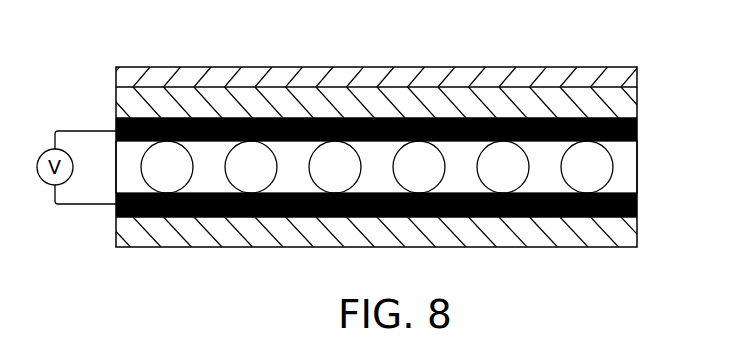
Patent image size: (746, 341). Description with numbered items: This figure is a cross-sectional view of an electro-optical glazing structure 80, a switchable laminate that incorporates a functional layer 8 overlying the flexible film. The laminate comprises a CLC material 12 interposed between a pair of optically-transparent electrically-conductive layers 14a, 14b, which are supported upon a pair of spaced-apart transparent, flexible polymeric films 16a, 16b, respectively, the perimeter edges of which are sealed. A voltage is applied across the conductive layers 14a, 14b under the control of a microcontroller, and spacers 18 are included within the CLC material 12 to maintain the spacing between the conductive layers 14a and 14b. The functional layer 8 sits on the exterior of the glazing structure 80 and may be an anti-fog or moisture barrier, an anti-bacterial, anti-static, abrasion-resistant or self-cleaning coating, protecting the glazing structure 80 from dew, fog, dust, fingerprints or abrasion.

The electro-optical glazing structure 80 is at (509, 54).
The functional layer 8 is at (620, 78).
The transparent flexible polymeric film 16a is at (625, 105).
The optically-transparent electrically-conductive layer 14a is at (637, 132).
The CLC material 12 is at (625, 165).
The spacers 18 is at (502, 160).
The optically-transparent electrically-conductive layer 14b is at (637, 207).
The transparent flexible polymeric film 16b is at (622, 232).